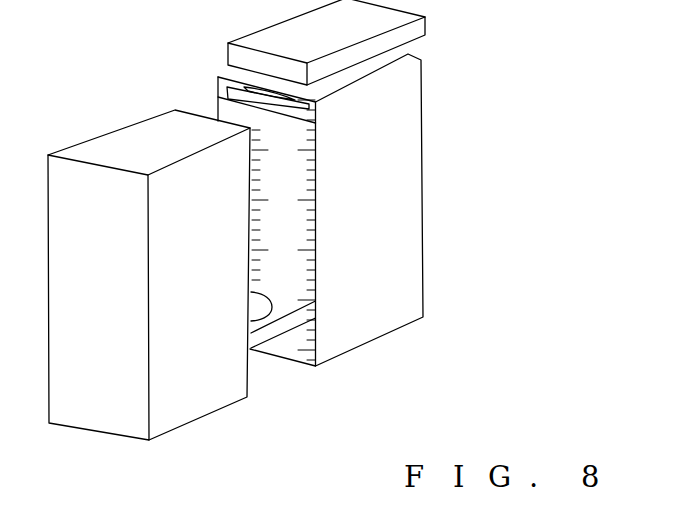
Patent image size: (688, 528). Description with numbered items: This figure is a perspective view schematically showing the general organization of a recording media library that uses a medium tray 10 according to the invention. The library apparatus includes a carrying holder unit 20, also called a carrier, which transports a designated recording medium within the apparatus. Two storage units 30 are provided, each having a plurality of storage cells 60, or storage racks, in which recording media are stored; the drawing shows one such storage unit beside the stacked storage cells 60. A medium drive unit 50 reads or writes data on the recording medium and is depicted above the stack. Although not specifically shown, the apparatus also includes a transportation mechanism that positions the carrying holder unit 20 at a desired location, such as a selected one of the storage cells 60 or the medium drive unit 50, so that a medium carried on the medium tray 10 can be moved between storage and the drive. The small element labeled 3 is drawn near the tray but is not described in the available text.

The element in slot 3 is at (247, 89).
The medium tray 10 is at (218, 97).
The carrying holder unit 20 is at (255, 343).
The storage units 30 is at (324, 373).
The medium drive unit 50 is at (430, 26).
The storage cells 60 is at (313, 362).